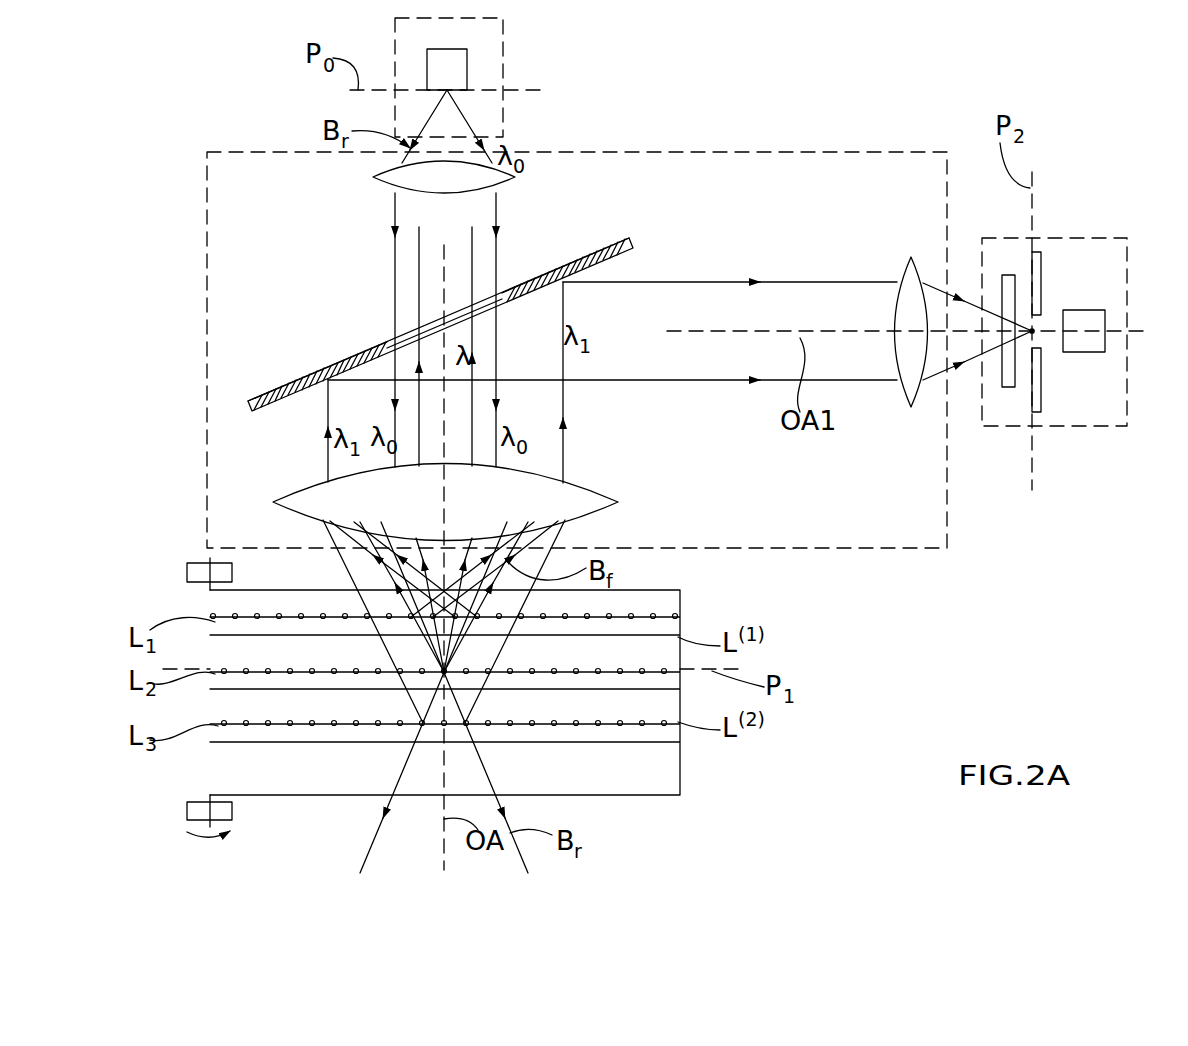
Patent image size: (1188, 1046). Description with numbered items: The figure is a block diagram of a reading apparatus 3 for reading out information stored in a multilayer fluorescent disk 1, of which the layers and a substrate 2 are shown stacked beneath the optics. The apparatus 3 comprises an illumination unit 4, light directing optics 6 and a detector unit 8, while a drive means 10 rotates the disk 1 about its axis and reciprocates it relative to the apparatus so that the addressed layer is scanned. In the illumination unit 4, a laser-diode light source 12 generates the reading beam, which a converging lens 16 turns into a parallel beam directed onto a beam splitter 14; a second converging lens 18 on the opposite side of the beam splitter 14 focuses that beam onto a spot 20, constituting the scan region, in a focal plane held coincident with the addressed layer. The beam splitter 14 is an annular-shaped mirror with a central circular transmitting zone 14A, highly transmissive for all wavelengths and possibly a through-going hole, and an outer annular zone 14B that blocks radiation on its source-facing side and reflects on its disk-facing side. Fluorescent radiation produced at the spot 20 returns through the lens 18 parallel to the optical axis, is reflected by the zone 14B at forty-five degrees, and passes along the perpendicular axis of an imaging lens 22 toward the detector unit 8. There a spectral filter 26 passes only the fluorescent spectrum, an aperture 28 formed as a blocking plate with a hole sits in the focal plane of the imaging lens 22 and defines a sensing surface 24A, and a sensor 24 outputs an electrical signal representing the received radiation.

The disk 1 is at (474, 684).
The substrate 2 is at (645, 773).
The reading apparatus 3 is at (270, 72).
The illumination unit 4 is at (512, 28).
The light directing optics 6 is at (832, 143).
The detector unit 8 is at (1110, 236).
The drive means 10 is at (192, 561).
The light source 12 is at (468, 70).
The beam splitter 14 is at (237, 390).
The transmitting zone 14A is at (483, 303).
The annular-shaped zone 14B is at (343, 360).
The converging lens 16 is at (517, 178).
The converging lens 18 is at (582, 483).
The spot 20 is at (432, 680).
The imaging lens 22 is at (921, 262).
The sensor 24 is at (1080, 310).
The sensing surface 24A is at (1030, 335).
The spectral filter 26 is at (1000, 385).
The aperture 28 is at (1037, 252).